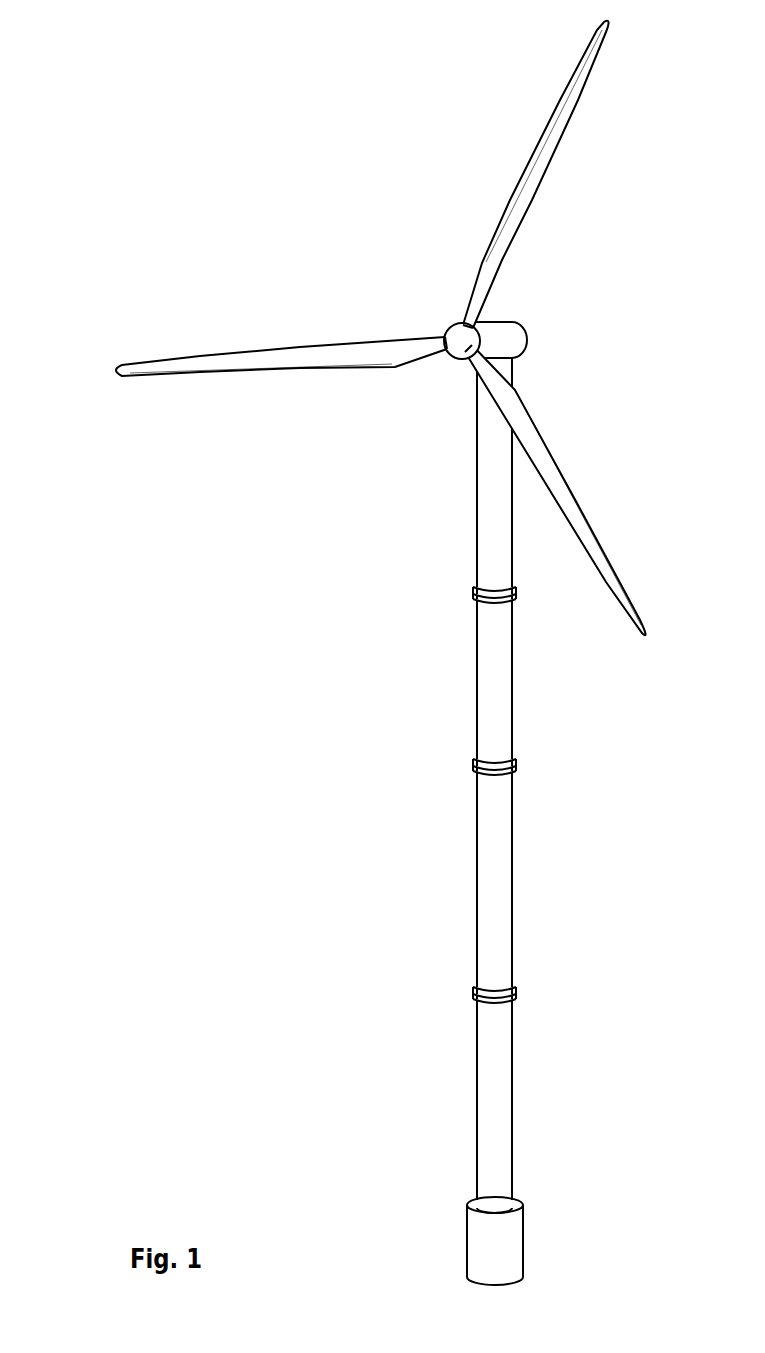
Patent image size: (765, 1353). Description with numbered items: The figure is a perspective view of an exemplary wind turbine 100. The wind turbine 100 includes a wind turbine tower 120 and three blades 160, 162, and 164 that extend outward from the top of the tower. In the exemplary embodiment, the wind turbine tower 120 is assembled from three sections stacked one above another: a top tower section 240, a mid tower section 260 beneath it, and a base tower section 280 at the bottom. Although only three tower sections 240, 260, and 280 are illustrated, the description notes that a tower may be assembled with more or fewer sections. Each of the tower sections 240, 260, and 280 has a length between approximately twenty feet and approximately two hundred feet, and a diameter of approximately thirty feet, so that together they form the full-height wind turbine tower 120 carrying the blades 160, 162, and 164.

The wind turbine 100 is at (166, 126).
The wind turbine tower 120 is at (448, 723).
The blade 160 is at (238, 352).
The blade 162 is at (542, 173).
The blade 164 is at (563, 472).
The top tower section 240 is at (497, 650).
The mid tower section 260 is at (497, 860).
The base tower section 280 is at (500, 1060).